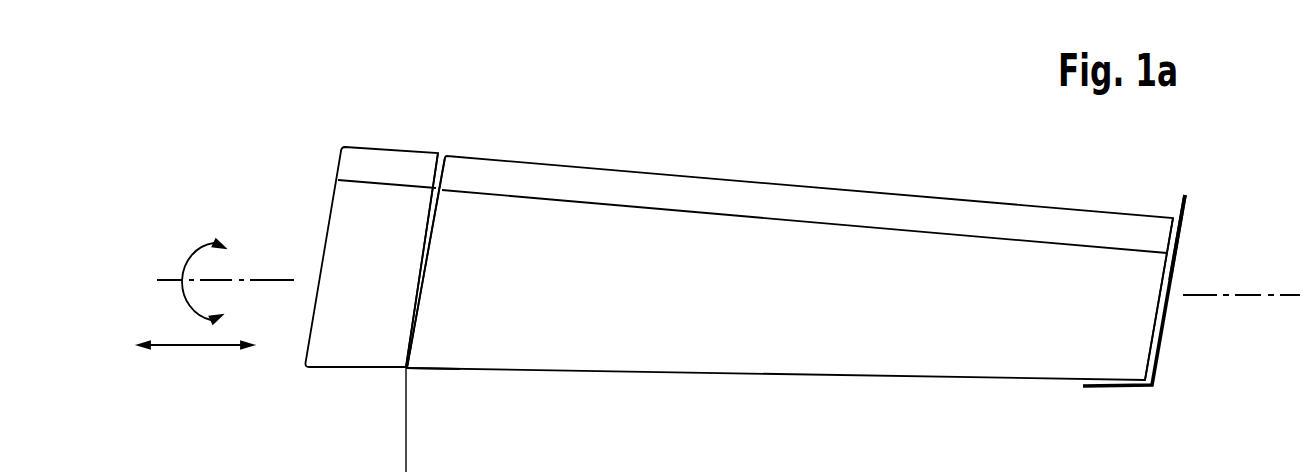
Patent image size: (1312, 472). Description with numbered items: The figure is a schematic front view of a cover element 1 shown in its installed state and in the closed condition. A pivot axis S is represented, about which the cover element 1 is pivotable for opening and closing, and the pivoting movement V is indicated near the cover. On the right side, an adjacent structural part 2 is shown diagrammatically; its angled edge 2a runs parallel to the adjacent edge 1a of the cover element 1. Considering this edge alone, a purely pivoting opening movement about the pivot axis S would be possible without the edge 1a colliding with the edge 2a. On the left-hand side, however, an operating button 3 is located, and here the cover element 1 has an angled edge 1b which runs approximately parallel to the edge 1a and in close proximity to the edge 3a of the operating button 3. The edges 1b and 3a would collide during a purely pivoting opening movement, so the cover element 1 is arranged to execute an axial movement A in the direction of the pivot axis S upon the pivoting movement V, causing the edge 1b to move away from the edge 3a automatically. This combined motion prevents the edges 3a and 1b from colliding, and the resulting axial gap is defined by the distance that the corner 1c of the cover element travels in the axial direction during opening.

The cover element 1 is at (767, 355).
The edge of cover element 1a is at (1154, 265).
The angled edge of cover element 1b is at (443, 221).
The corner of cover element 1c is at (412, 365).
The adjacent structural part 2 is at (1120, 387).
The angled edge of adjacent structural part 2a is at (1180, 270).
The operating button 3 is at (352, 335).
The edge of operating button 3a is at (421, 210).
The pivoting movement V is at (175, 278).
The axial movement A is at (195, 347).
The pivot axis S is at (1240, 297).